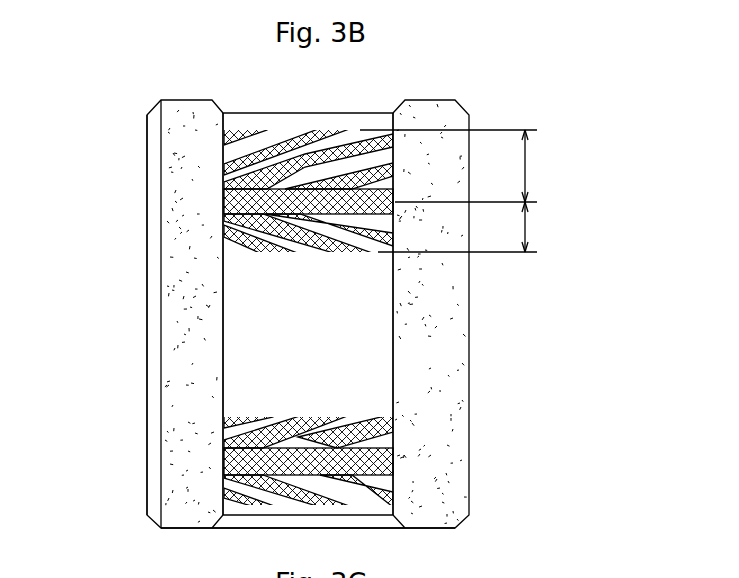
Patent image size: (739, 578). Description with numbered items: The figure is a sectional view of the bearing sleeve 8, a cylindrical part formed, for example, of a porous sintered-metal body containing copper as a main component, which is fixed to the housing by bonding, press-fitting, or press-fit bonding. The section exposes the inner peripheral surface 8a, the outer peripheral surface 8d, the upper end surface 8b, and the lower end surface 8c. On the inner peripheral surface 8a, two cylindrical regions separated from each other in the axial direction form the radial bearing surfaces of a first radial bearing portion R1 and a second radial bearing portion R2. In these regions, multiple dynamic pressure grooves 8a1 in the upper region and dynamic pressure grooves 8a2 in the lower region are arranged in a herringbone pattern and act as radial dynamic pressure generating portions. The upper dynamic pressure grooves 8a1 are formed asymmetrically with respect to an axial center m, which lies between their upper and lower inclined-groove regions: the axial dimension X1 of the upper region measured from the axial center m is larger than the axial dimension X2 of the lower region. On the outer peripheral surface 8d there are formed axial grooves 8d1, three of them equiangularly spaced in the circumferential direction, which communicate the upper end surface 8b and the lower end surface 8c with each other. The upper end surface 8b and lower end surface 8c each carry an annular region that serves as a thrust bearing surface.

The bearing sleeve 8 is at (118, 115).
The inner peripheral surface 8a is at (391, 316).
The dynamic pressure grooves 8a1 is at (267, 141).
The dynamic pressure grooves 8a2 is at (272, 424).
The upper end surface 8b is at (428, 100).
The lower end surface 8c is at (428, 529).
The outer peripheral surface 8d is at (148, 288).
The axial grooves 8d1 is at (161, 358).
The first radial bearing portion R1 is at (222, 186).
The second radial bearing portion R2 is at (222, 466).
The axial dimension of the upper region X1 is at (462, 166).
The axial dimension of the lower region X2 is at (471, 227).
The axial center m is at (535, 200).